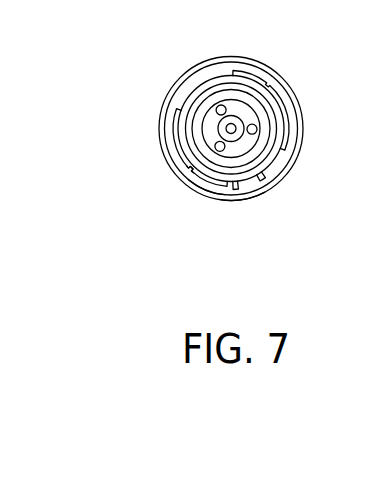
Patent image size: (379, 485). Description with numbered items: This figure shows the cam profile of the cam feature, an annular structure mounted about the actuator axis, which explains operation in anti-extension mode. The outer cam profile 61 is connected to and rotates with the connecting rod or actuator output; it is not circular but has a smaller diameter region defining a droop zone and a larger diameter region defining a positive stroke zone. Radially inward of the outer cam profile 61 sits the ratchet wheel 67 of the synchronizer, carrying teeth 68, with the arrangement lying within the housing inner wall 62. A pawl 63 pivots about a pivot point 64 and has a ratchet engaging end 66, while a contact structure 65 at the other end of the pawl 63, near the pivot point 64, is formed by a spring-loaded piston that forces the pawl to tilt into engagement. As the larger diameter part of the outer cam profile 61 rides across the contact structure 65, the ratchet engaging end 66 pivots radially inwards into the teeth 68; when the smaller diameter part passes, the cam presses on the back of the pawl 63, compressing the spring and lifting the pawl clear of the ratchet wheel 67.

The outer cam profile 61 is at (294, 90).
The housing inner wall 62 is at (166, 146).
The pawl 63 is at (244, 200).
The pivot point 64 is at (237, 192).
The contact structure 65 is at (267, 180).
The ratchet engaging end 66 is at (205, 190).
The ratchet wheel 67 is at (185, 102).
The teeth 68 is at (192, 167).